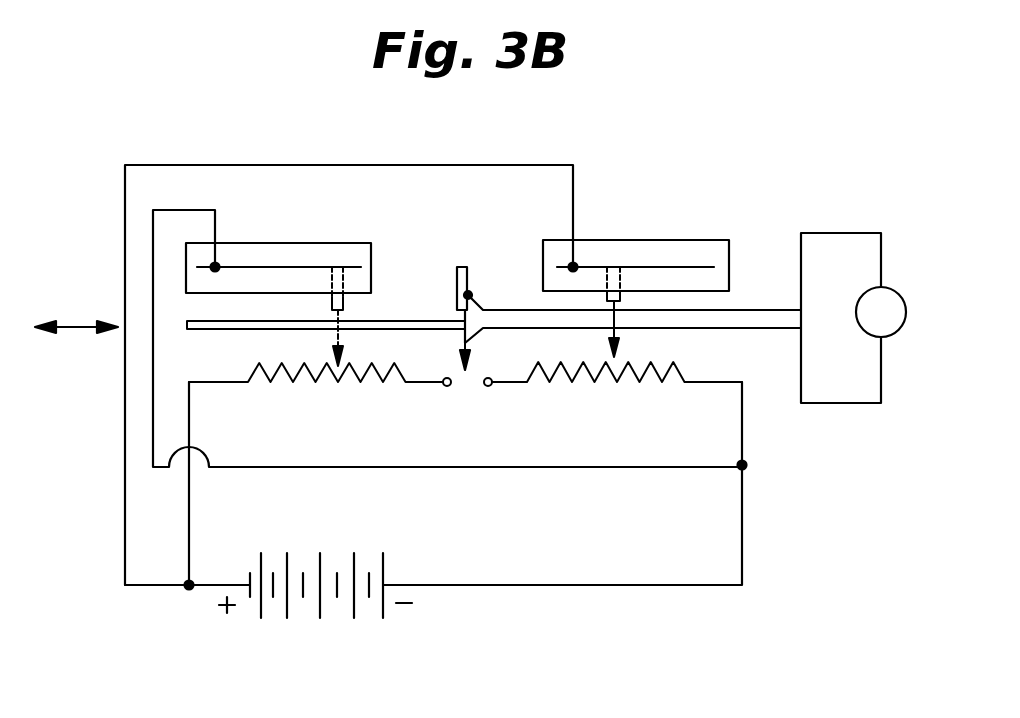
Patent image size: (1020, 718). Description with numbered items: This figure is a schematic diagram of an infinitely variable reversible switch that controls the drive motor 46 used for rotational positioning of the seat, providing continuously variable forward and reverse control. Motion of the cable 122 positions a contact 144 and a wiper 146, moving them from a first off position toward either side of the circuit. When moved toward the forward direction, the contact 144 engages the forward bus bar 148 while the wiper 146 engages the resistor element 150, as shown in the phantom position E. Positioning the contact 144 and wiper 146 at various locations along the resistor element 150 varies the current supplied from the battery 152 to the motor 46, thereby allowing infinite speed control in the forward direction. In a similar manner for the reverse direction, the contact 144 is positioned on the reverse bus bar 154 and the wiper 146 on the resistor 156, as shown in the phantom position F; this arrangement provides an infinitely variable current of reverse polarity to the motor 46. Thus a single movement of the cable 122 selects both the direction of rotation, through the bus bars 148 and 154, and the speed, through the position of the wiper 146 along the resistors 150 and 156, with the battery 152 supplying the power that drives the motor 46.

The motor 46 is at (896, 288).
The cable 122 is at (228, 332).
The contact 144 is at (470, 270).
The wiper 146 is at (472, 367).
The forward bus bar 148 is at (668, 266).
The resistor element 150 is at (596, 381).
The battery 152 is at (286, 678).
The reverse bus bar 154 is at (293, 268).
The resistor 156 is at (293, 381).
The phantom position F is at (346, 304).
The phantom position E is at (617, 318).